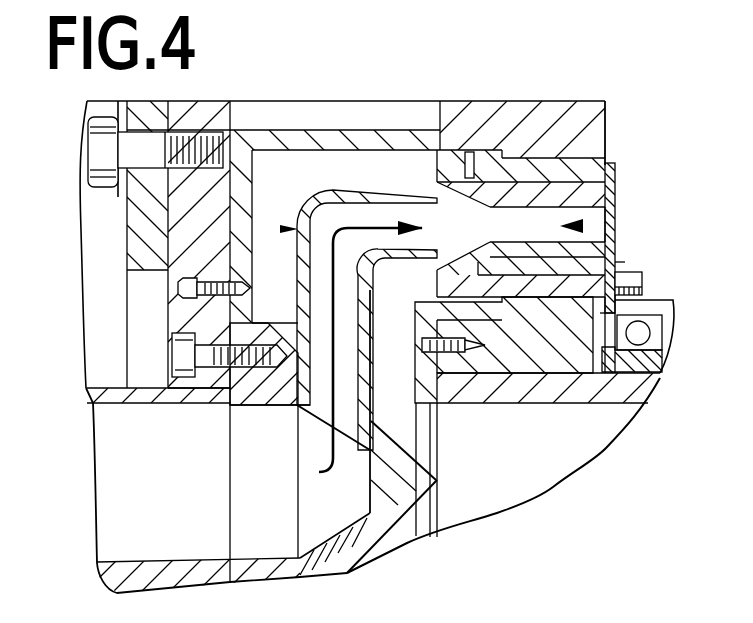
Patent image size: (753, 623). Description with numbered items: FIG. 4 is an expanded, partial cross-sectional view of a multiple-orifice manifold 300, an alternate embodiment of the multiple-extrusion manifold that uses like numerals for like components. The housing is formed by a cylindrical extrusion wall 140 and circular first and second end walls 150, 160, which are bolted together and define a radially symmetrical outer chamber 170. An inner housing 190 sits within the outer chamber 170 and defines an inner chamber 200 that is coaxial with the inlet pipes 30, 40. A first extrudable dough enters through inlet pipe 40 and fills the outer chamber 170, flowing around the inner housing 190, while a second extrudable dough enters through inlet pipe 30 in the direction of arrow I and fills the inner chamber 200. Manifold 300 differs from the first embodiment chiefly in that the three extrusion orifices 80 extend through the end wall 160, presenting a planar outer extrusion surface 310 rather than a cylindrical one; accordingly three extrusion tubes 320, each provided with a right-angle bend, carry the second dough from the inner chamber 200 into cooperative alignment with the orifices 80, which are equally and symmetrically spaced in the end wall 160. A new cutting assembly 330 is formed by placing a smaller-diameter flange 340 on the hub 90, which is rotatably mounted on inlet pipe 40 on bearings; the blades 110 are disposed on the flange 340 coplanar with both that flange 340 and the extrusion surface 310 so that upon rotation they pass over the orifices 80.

The inlet pipe 30 is at (137, 487).
The inlet pipe 40 is at (486, 482).
The extrusion orifices 80 is at (575, 226).
The hub 90 is at (663, 307).
The blades 110 is at (610, 227).
The cylindrical extrusion wall 140 is at (395, 113).
The first end wall 150 is at (210, 113).
The second end wall 160 is at (530, 116).
The outer chamber 170 is at (273, 193).
The inner housing 190 is at (402, 542).
The inner chamber 200 is at (270, 428).
The multiple-orifice manifold 300 is at (630, 86).
The planar outer extrusion surface 310 is at (614, 162).
The extrusion tubes 320 is at (282, 229).
The cutting assembly 330 is at (652, 259).
The flange 340 is at (643, 274).
The arrow I is at (319, 472).